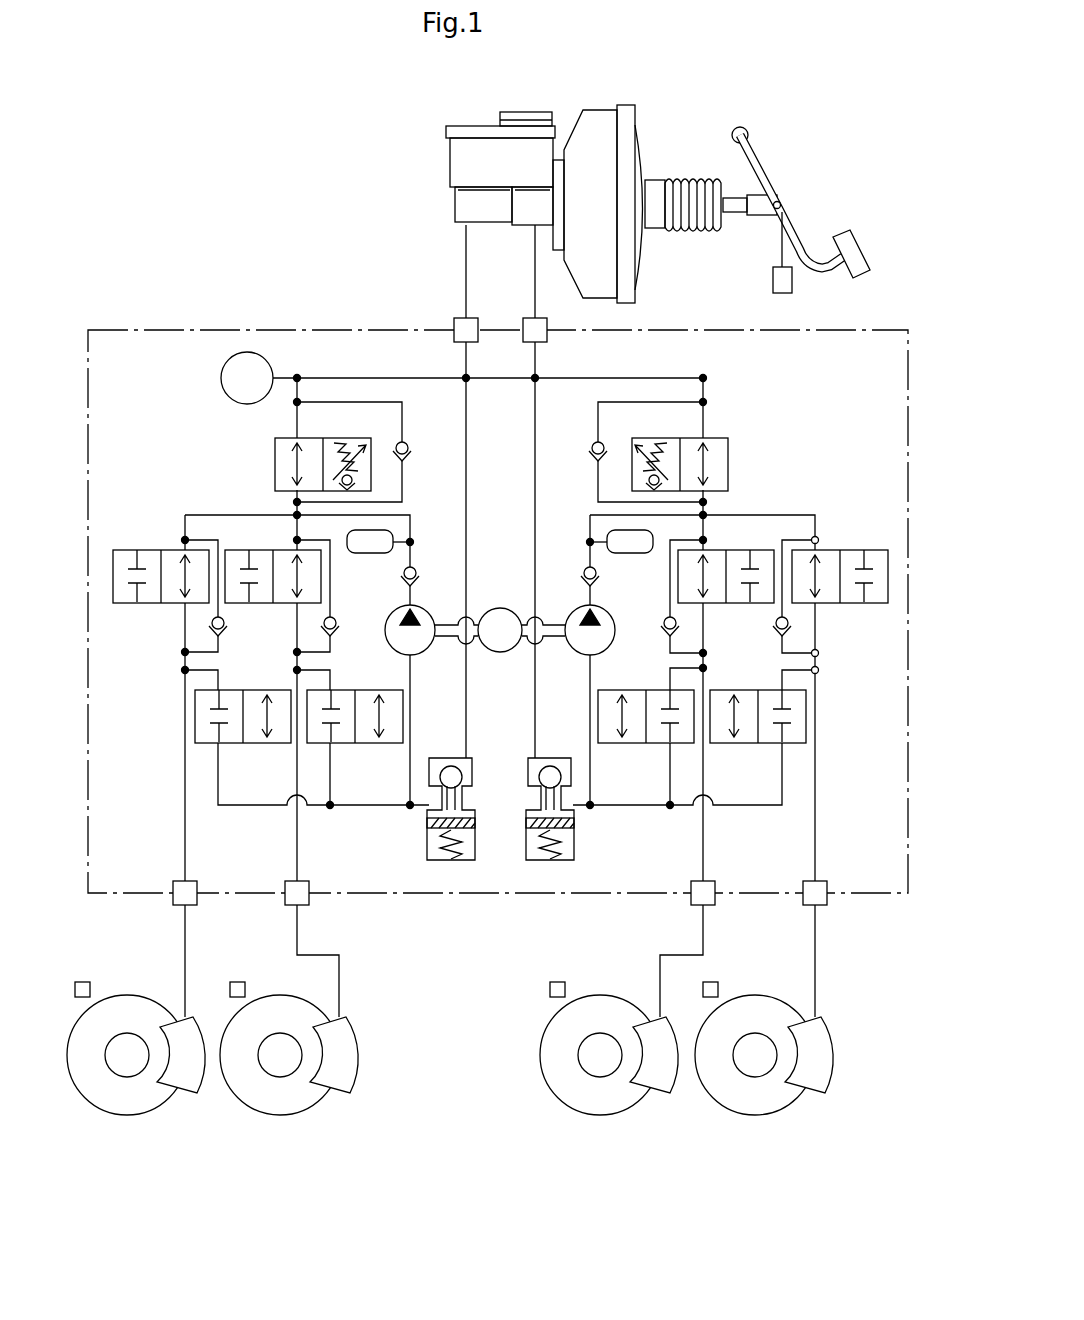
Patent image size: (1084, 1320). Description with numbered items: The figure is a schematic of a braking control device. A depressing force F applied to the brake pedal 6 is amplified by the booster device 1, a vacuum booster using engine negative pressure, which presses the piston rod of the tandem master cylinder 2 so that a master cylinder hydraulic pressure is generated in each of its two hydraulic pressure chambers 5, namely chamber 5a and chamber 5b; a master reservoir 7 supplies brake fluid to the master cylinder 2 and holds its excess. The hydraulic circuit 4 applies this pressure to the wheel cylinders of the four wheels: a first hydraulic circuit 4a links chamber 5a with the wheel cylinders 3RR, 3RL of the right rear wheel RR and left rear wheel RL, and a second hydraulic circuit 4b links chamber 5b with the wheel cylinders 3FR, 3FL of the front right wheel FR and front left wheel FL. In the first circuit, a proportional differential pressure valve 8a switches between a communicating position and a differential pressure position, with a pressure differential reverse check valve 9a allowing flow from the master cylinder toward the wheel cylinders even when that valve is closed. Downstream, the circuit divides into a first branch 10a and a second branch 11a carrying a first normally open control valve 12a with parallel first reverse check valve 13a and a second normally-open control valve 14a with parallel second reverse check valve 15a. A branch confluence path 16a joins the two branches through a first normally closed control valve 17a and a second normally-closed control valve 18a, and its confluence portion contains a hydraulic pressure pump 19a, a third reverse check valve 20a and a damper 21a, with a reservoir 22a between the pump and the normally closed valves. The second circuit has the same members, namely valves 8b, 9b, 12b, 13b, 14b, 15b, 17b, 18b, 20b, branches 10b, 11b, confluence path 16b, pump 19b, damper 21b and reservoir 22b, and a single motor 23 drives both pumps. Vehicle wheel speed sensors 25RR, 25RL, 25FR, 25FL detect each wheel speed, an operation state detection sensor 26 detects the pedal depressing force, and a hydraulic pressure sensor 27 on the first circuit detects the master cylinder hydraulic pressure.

The booster device 1 is at (593, 120).
The master cylinder 2 is at (447, 198).
The wheel cylinder 3RR is at (183, 1083).
The wheel cylinder 3RL is at (340, 1073).
The wheel cylinder 3FR is at (663, 1083).
The wheel cylinder 3FL is at (815, 1078).
The hydraulic circuit 4 is at (127, 325).
The first hydraulic circuit 4a is at (465, 298).
The second hydraulic circuit 4b is at (540, 298).
The hydraulic pressure chambers 5 is at (383, 203).
The hydraulic pressure chamber 5a is at (467, 203).
The hydraulic pressure chamber 5b is at (527, 217).
The brake pedal 6 is at (840, 233).
The master reservoir 7 is at (475, 143).
The proportional differential pressure valve 8a is at (275, 463).
The proportional differential pressure valve 8b is at (727, 463).
The pressure differential reverse check valve 9a is at (407, 443).
The pressure differential reverse check valve 9b is at (595, 443).
The first branch 10a is at (203, 513).
The first branch 10b is at (705, 530).
The second branch 11a is at (293, 530).
The second branch 11b is at (800, 513).
The first normally open control valve 12a is at (155, 603).
The first normally open control valve 12b is at (678, 577).
The first reverse check valve 13a is at (227, 630).
The first reverse check valve 13b is at (665, 630).
The second normally-open control valve 14a is at (322, 577).
The second normally-open control valve 14b is at (845, 603).
The second reverse check valve 15a is at (340, 630).
The second reverse check valve 15b is at (777, 630).
The branch confluence path 16a is at (253, 807).
The branch confluence path 16b is at (745, 807).
The first normally closed control valve 17a is at (228, 743).
The first normally closed control valve 17b is at (655, 743).
The second normally-closed control valve 18a is at (343, 743).
The second normally-closed control valve 18b is at (775, 743).
The hydraulic pressure pump 19a is at (420, 643).
The hydraulic pressure pump 19b is at (580, 643).
The third reverse check valve 20a is at (415, 577).
The third reverse check valve 20b is at (585, 577).
The damper 21a is at (373, 537).
The damper 21b is at (625, 533).
The reservoir 22a is at (428, 840).
The reservoir 22b is at (575, 842).
The motor 23 is at (497, 602).
The vehicle wheel speed sensor 25RR is at (82, 982).
The vehicle wheel speed sensor 25RL is at (238, 982).
The vehicle wheel speed sensor 25FR is at (550, 990).
The vehicle wheel speed sensor 25FL is at (718, 990).
The operation state detection sensor 26 is at (773, 280).
The hydraulic pressure sensor 27 is at (220, 378).
The pedal depressing force F is at (868, 233).
The right rear wheel RR is at (118, 1110).
The left rear wheel RL is at (290, 1107).
The front right wheel FR is at (583, 1097).
The front left wheel FL is at (750, 1107).